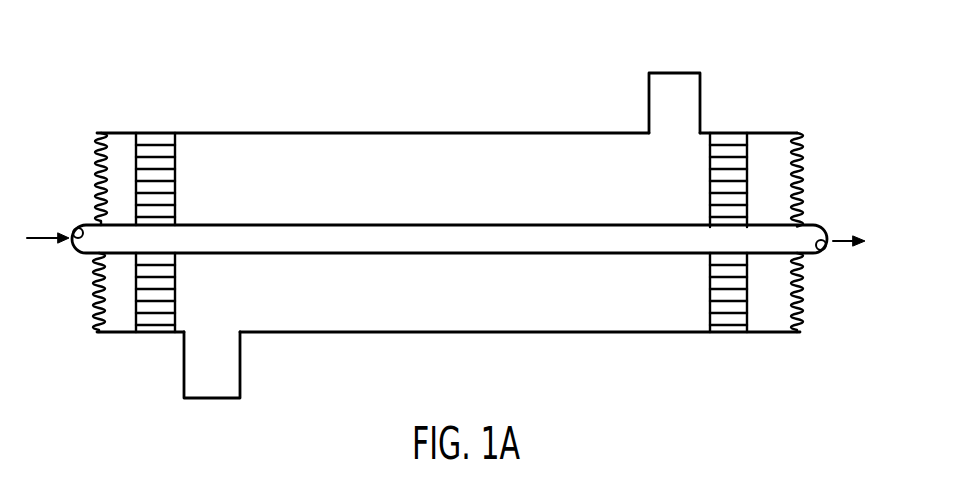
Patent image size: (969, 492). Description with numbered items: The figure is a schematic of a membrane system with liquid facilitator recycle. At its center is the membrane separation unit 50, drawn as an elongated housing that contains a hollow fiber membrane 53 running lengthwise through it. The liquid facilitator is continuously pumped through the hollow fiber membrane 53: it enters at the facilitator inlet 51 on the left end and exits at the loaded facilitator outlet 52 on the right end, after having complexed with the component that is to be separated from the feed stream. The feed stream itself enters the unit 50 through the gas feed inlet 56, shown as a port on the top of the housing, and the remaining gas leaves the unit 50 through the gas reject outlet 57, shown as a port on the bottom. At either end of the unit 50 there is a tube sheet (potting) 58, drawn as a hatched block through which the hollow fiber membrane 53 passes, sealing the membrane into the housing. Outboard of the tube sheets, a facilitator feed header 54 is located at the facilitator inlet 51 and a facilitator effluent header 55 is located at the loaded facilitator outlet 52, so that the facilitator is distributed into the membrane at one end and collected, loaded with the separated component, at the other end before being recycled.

The membrane separation unit 50 is at (462, 133).
The facilitator inlet 51 is at (48, 227).
The loaded facilitator outlet 52 is at (866, 243).
The hollow fiber membrane 53 is at (517, 253).
The facilitator feed header 54 is at (93, 160).
The facilitator effluent header 55 is at (801, 157).
The gas feed inlet 56 is at (672, 73).
The gas reject outlet 57 is at (213, 400).
The tube sheet (potting) 58 is at (200, 98).